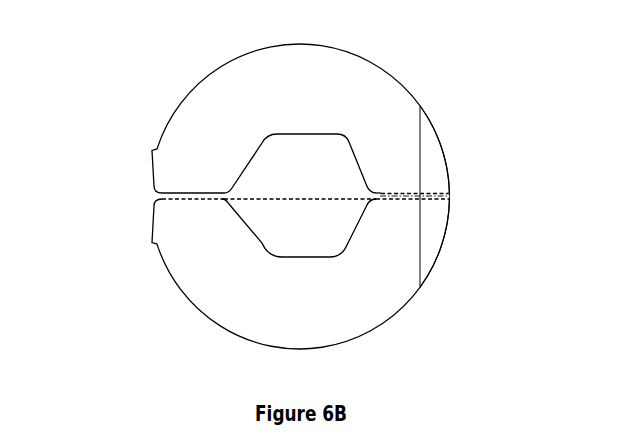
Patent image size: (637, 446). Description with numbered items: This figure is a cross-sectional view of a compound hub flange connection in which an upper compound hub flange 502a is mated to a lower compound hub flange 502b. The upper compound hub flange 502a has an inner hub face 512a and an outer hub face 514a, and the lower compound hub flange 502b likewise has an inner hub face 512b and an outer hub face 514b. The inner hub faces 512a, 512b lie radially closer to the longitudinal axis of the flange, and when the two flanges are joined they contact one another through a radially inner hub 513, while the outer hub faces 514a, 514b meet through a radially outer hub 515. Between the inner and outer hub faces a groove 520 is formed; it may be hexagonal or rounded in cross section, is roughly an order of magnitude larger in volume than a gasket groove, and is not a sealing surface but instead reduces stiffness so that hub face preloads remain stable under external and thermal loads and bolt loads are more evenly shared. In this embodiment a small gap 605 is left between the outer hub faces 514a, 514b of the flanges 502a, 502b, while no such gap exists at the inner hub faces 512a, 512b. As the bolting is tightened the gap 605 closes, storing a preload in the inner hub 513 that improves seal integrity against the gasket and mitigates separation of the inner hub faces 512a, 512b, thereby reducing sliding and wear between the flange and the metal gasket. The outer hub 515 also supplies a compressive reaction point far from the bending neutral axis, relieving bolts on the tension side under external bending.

The upper compound hub flange 502a is at (395, 62).
The lower compound hub flange 502b is at (410, 327).
The groove 520 is at (317, 184).
The outer hub face 514a is at (193, 180).
The outer hub face 514b is at (200, 208).
The inner hub face 512a is at (415, 187).
The inner hub face 512b is at (414, 212).
The radially inner hub 513 is at (427, 192).
The gap 605 is at (163, 198).
The radially outer hub 515 is at (183, 200).